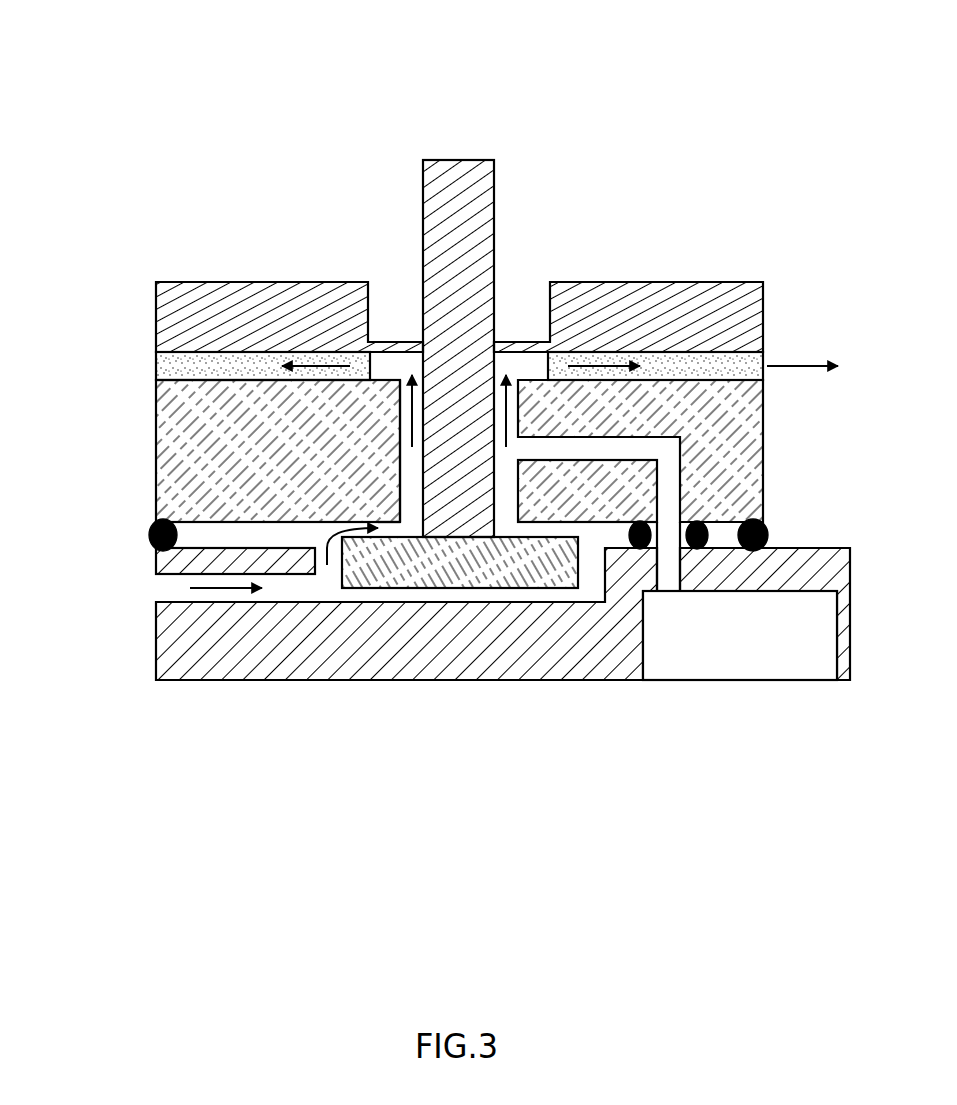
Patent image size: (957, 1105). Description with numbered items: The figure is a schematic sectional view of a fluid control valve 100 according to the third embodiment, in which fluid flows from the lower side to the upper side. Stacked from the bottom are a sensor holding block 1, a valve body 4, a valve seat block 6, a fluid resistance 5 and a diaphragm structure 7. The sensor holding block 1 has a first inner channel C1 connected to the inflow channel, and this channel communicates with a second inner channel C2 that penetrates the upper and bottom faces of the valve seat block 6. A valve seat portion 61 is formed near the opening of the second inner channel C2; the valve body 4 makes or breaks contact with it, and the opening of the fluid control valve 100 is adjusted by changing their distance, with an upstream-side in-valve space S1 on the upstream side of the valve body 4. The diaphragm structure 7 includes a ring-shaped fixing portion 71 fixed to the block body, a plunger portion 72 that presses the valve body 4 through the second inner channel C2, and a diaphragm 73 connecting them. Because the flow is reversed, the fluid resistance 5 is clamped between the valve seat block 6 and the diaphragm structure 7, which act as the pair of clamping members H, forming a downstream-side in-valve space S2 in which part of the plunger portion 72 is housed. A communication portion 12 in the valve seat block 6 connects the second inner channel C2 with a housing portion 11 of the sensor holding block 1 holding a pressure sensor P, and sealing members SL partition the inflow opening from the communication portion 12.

The fluid control valve 100 is at (280, 78).
The fixing portion 71 is at (262, 281).
The plunger portion 72 is at (422, 178).
The diaphragm 73 is at (398, 341).
The fluid resistance 5 is at (315, 351).
The downstream-side in-valve space S2 is at (520, 372).
The valve seat block 6 is at (155, 384).
The diaphragm structure 7 is at (190, 272).
The pair of clamping members H is at (110, 232).
The communication portion 12 is at (700, 453).
The valve seat portion 61 is at (378, 520).
The second inner channel C2 is at (400, 456).
The valve body 4 is at (450, 590).
The sensor holding block 1 is at (155, 640).
The first inner channel C1 is at (172, 596).
The upstream-side in-valve space S1 is at (336, 592).
The housing portion 11 is at (643, 633).
The pressure sensor P is at (740, 635).
The sealing members SL is at (149, 534).